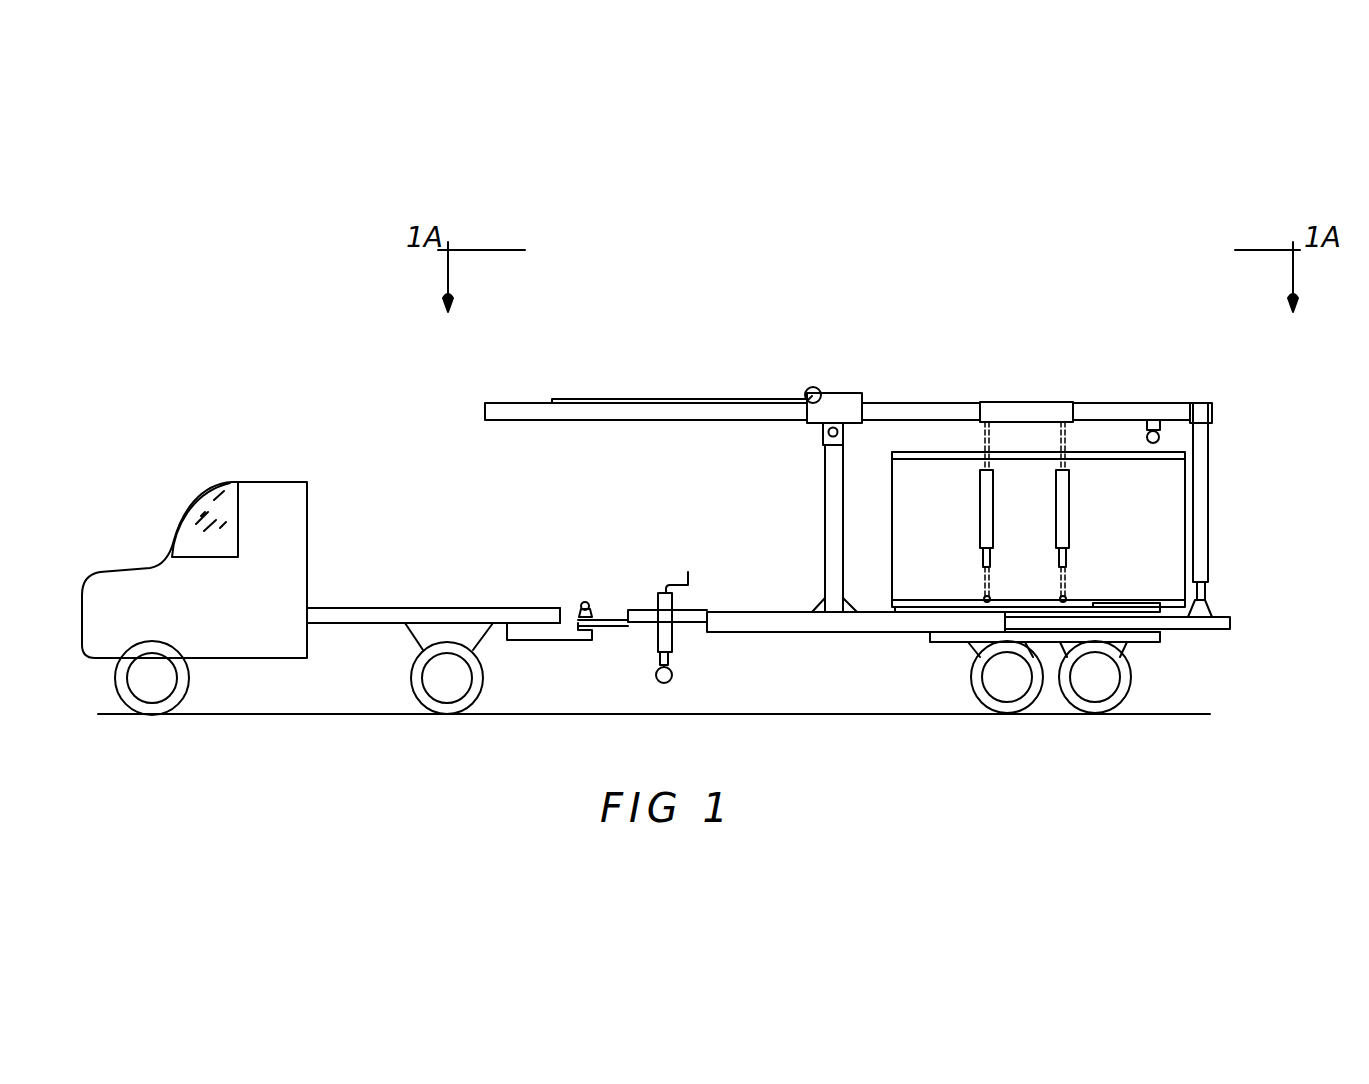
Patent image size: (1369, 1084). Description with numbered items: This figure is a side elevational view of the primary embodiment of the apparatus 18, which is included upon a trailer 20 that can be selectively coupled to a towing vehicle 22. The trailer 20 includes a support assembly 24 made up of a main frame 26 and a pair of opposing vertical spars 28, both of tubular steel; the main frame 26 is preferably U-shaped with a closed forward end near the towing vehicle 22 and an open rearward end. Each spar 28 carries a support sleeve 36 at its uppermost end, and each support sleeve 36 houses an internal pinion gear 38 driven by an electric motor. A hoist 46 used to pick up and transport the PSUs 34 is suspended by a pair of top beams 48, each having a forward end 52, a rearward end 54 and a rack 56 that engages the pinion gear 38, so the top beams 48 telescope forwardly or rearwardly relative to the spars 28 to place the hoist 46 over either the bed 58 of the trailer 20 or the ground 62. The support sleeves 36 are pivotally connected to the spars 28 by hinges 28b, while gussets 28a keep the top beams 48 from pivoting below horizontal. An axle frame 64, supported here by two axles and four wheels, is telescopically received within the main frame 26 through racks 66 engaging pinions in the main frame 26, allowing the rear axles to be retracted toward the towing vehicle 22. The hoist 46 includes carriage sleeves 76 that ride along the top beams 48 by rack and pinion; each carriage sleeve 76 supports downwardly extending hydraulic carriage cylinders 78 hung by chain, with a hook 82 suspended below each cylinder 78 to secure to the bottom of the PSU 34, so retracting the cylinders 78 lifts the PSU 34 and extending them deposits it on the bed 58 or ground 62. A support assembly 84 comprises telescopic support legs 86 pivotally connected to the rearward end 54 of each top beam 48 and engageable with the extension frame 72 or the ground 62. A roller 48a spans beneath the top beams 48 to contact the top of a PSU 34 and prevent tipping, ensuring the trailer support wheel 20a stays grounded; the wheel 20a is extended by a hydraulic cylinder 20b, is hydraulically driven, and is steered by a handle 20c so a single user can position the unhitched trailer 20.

The apparatus 18 is at (950, 361).
The trailer 20 is at (647, 613).
The trailer support wheel 20a is at (673, 676).
The hydraulically powered cylinder 20b is at (652, 648).
The handle 20c is at (692, 580).
The towing vehicle 22 is at (247, 482).
The support assembly 24 is at (800, 483).
The main frame 26 is at (793, 625).
The vertical spars 28 is at (825, 565).
The gussets 28a is at (845, 460).
The hinges 28b is at (822, 432).
The PSU 34 is at (1172, 498).
The support sleeve 36 is at (823, 388).
The pinion gear 38 is at (805, 388).
The hoist 46 is at (1075, 403).
The top beams 48 is at (1172, 403).
The roller 48a is at (1150, 420).
The forward end 52 is at (523, 403).
The rearward end 54 is at (1215, 415).
The rack 56 is at (650, 400).
The bed 58 is at (920, 608).
The ground 62 is at (1190, 712).
The axle frame 64 is at (1130, 630).
The racks 66 is at (1035, 606).
The extension frame 72 is at (1235, 623).
The carriage sleeves 76 is at (1025, 403).
The carriage cylinders 78 is at (984, 525).
The hook 82 is at (984, 600).
The support assembly 84 is at (1211, 469).
The support legs 86 is at (1208, 565).